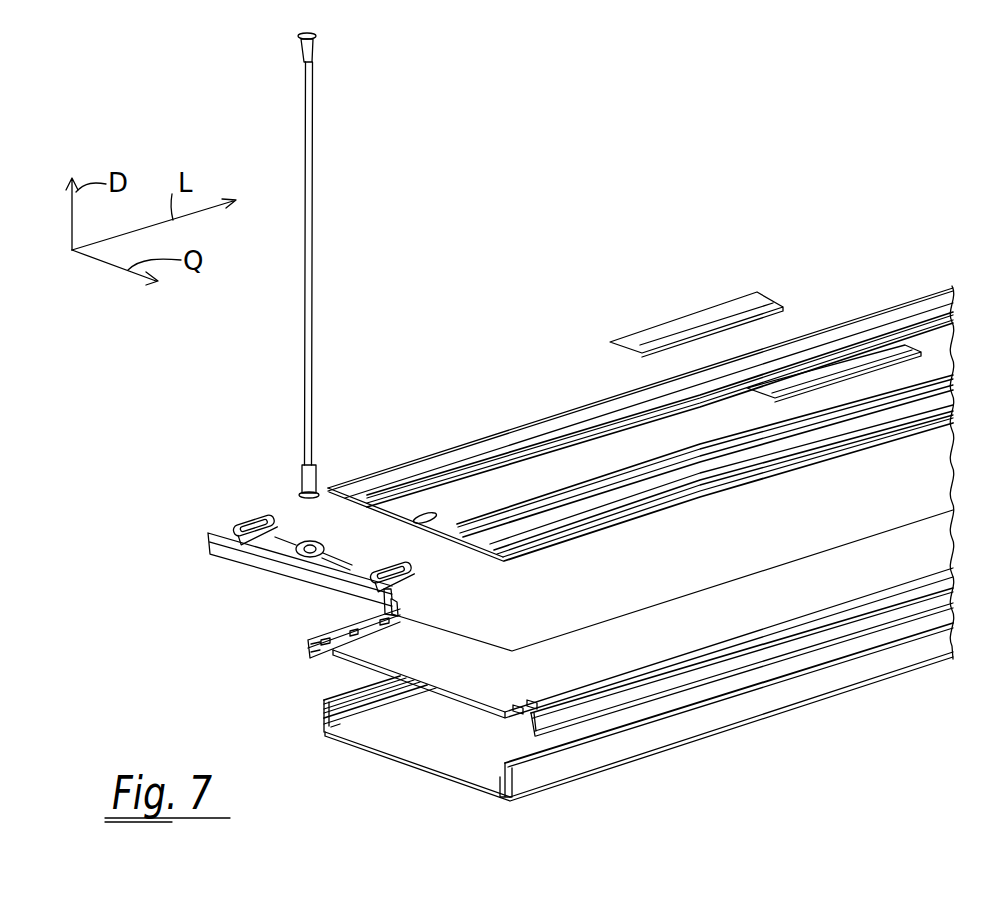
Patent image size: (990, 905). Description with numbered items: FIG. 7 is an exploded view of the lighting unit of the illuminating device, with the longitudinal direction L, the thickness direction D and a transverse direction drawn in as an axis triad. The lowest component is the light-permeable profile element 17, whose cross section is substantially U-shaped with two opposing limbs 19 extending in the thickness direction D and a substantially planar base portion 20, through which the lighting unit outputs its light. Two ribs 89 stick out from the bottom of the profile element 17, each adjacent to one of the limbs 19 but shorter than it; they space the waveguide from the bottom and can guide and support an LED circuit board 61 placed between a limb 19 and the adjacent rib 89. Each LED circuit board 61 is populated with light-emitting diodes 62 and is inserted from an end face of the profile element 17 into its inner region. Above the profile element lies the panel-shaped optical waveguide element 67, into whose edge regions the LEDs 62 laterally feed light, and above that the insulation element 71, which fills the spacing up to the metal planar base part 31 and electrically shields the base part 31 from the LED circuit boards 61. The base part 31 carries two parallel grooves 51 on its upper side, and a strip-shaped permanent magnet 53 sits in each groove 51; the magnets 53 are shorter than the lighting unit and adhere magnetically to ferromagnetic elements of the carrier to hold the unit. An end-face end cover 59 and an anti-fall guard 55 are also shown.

The profile element 17 is at (453, 775).
The limbs 19 is at (322, 720).
The base portion 20 is at (415, 760).
The planar base part 31 is at (485, 497).
The grooves 51 is at (529, 436).
The permanent magnet 53 is at (712, 315).
The anti-fall guard 55 is at (309, 303).
The end-face end cover 59 is at (242, 555).
The LED circuit board 61 is at (307, 650).
The light-emitting diodes 62 is at (353, 630).
The optical waveguide element 67 is at (465, 700).
The insulation element 71 is at (638, 595).
The ribs 89 is at (352, 720).